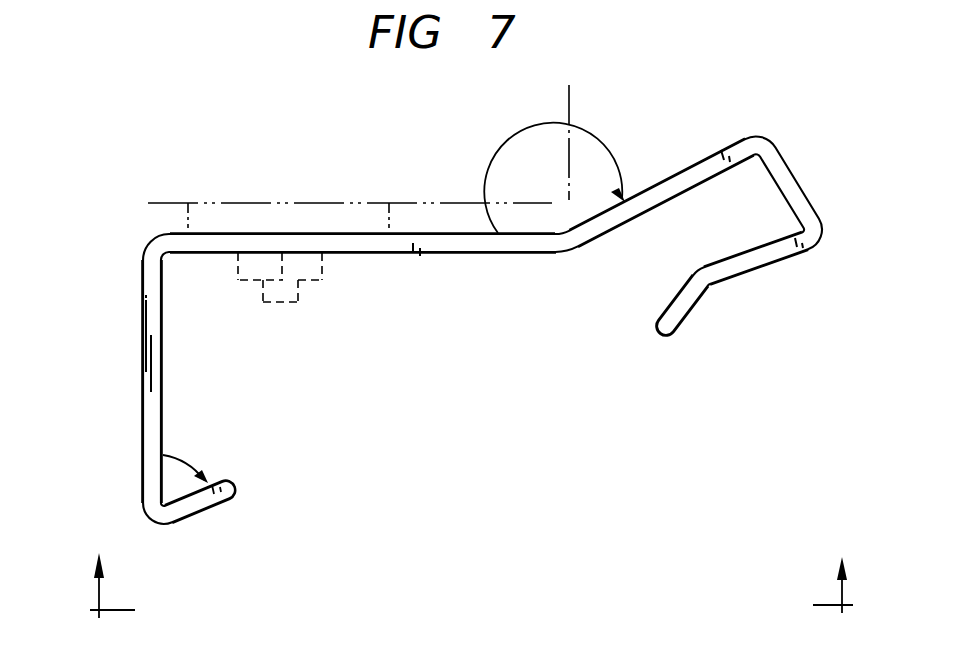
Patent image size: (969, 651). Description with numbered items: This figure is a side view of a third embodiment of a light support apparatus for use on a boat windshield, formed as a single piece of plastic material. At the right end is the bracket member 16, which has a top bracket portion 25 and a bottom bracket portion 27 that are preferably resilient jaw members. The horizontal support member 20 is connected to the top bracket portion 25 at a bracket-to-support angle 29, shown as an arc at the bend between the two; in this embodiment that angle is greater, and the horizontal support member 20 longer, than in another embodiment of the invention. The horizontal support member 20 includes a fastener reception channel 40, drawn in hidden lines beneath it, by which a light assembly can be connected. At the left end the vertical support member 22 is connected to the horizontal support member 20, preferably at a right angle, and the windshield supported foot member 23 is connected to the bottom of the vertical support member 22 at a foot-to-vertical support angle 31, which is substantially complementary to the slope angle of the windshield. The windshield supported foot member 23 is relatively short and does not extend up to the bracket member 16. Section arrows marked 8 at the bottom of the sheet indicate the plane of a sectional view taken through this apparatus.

The bracket member 16 is at (804, 184).
The horizontal support member 20 is at (470, 243).
The vertical support member 22 is at (142, 408).
The windshield supported foot member 23 is at (227, 494).
The top bracket portion 25 is at (707, 162).
The bottom bracket portion 27 is at (678, 330).
The bracket-to-support angle 29 is at (530, 177).
The foot-to-vertical support angle 31 is at (200, 468).
The fastener reception channel 40 is at (262, 243).
The section line 8- 8 is at (470, 602).